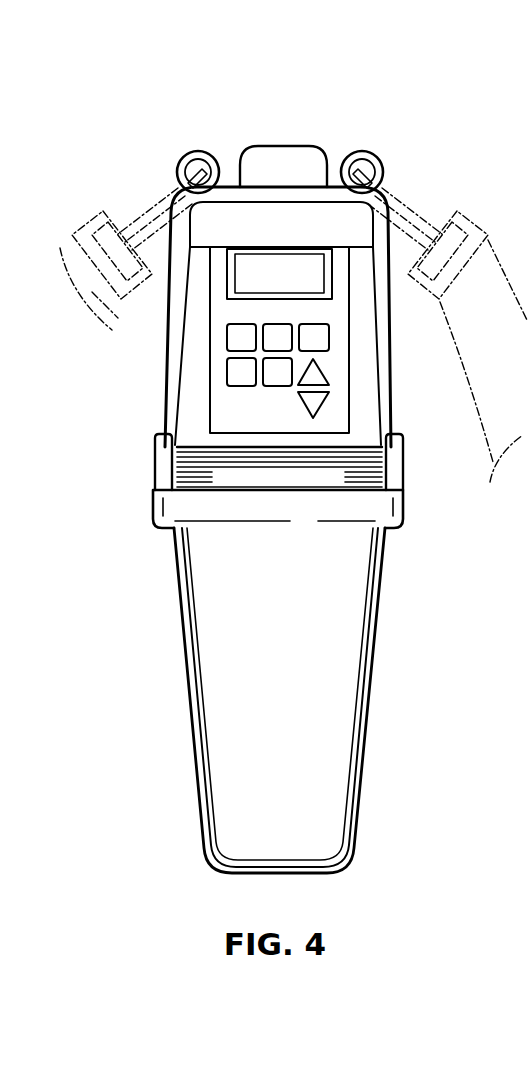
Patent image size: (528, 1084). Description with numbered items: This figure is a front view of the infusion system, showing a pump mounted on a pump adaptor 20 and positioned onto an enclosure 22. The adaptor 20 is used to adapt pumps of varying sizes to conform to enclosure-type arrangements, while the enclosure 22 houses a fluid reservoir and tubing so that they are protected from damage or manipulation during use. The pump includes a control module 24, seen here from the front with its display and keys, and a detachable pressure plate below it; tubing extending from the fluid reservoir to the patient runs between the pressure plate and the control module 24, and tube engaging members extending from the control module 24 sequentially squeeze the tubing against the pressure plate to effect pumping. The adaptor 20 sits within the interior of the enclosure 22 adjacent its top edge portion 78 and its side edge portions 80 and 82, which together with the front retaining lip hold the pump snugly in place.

The pump adaptor 20 is at (298, 213).
The enclosure 22 is at (178, 605).
The control module 24 is at (363, 402).
The top edge portion 78 is at (243, 167).
The side edge portion 80 is at (164, 354).
The side edge portion 82 is at (394, 348).